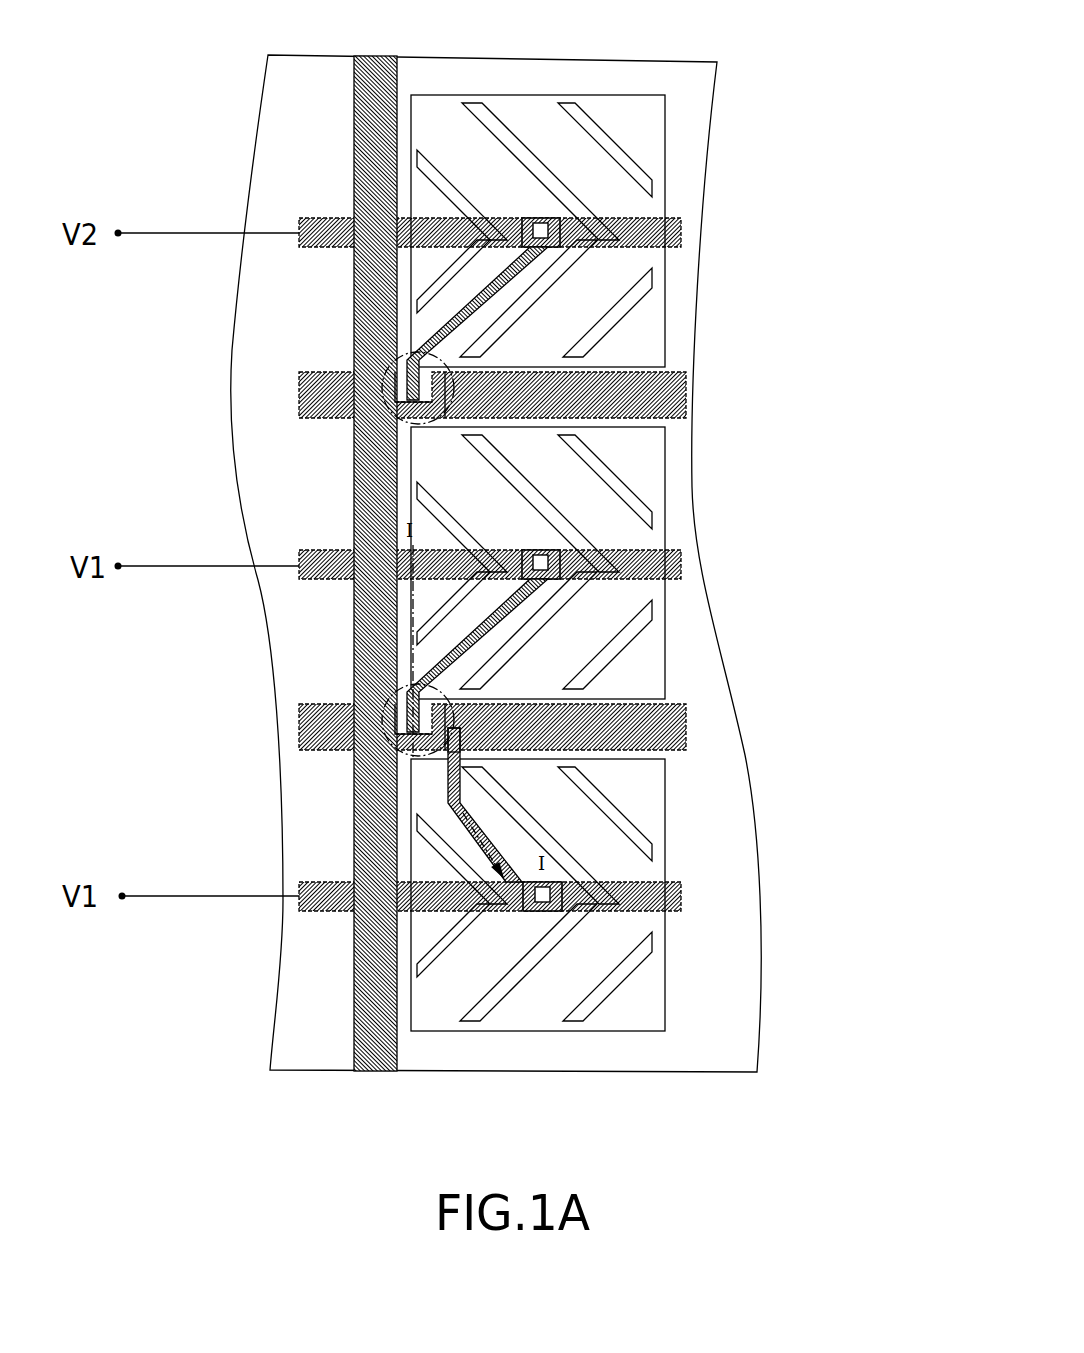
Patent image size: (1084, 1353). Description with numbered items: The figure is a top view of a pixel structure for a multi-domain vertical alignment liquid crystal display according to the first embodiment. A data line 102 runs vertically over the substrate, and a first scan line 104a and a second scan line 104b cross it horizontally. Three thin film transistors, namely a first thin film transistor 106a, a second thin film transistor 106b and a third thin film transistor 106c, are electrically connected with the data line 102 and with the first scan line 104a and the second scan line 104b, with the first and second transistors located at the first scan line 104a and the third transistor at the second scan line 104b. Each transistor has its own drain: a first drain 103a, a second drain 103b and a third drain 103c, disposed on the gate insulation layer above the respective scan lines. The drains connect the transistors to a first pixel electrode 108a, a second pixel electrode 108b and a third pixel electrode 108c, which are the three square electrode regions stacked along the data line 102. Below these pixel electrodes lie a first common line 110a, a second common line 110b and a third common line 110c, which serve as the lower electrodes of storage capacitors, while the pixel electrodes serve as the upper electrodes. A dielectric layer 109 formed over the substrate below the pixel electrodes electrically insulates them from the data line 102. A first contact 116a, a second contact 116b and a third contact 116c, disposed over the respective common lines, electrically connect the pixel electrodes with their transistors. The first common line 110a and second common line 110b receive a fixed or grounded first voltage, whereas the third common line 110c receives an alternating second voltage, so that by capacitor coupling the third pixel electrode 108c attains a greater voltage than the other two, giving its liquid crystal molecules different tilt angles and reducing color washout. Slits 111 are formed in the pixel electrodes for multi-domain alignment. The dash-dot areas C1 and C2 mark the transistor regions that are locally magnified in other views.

The data line 102 is at (378, 1058).
The first drain 103a is at (445, 792).
The second drain 103b is at (468, 636).
The third drain 103c is at (480, 297).
The first scan line 104a is at (298, 720).
The second scan line 104b is at (298, 388).
The first thin film transistor 106a is at (458, 738).
The second thin film transistor 106b is at (400, 725).
The third thin film transistor 106c is at (368, 378).
The first pixel electrode 108a is at (640, 1000).
The second pixel electrode 108b is at (640, 660).
The third pixel electrode 108c is at (640, 328).
The dielectric layer 109 is at (330, 1020).
The first common line 110a is at (681, 897).
The second common line 110b is at (681, 565).
The third common line 110c is at (681, 233).
The slits 111 is at (618, 155).
The first contact 116a is at (540, 912).
The second contact 116b is at (556, 578).
The third contact 116c is at (537, 226).
The area C1 is at (454, 718).
The area C2 is at (454, 386).